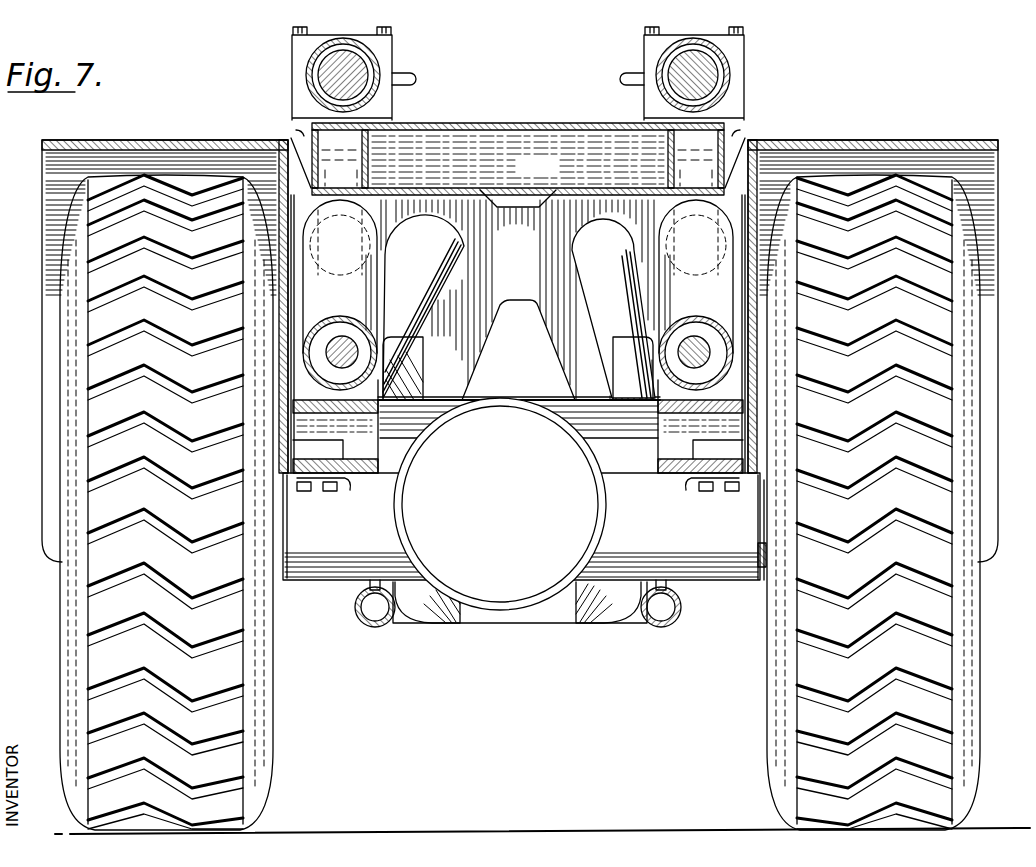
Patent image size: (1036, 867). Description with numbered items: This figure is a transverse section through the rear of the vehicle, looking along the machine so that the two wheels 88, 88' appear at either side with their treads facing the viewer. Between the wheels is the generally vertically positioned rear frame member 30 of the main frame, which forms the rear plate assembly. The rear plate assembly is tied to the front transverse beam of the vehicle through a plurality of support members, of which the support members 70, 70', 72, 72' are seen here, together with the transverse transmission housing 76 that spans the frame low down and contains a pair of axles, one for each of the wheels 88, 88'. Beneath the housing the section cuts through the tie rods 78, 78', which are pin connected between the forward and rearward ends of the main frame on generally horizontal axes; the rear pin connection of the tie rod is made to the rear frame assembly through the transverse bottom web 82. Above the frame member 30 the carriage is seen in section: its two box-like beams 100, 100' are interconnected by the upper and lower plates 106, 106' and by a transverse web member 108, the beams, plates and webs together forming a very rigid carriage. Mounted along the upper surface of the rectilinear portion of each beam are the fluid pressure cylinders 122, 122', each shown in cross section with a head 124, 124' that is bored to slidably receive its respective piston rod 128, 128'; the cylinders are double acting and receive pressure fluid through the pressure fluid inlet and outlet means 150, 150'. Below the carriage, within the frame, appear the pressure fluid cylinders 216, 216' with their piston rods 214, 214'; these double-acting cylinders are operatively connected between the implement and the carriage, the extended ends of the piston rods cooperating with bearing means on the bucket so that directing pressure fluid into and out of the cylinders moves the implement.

The rear frame member 30 is at (510, 274).
The support member 70 is at (423, 307).
The support member 70' is at (613, 309).
The support member 72 is at (427, 624).
The support member 72' is at (607, 624).
The transverse transmission housing 76 is at (684, 540).
The tie rod 78 is at (375, 622).
The tie rod 78' is at (661, 623).
The transverse bottom web 82 is at (527, 622).
The wheel 88 is at (138, 502).
The wheel 88' is at (896, 502).
The box-like beam 100 is at (270, 148).
The box-like beam 100' is at (760, 148).
The upper plate 106 is at (518, 138).
The lower plate 106' is at (642, 163).
The transverse web member 108 is at (556, 179).
The fluid pressure cylinder 122 is at (308, 61).
The fluid pressure cylinder 122' is at (725, 59).
The cylinder head 124 is at (366, 73).
The cylinder head 124' is at (664, 73).
The piston rod 128 is at (298, 75).
The piston rod 128' is at (733, 75).
The pressure fluid inlet and outlet means 150 is at (428, 71).
The pressure fluid inlet and outlet means 150' is at (602, 92).
The piston rod 214 is at (280, 352).
The piston rod 214' is at (661, 335).
The pressure fluid cylinder 216 is at (340, 295).
The pressure fluid cylinder 216' is at (696, 295).